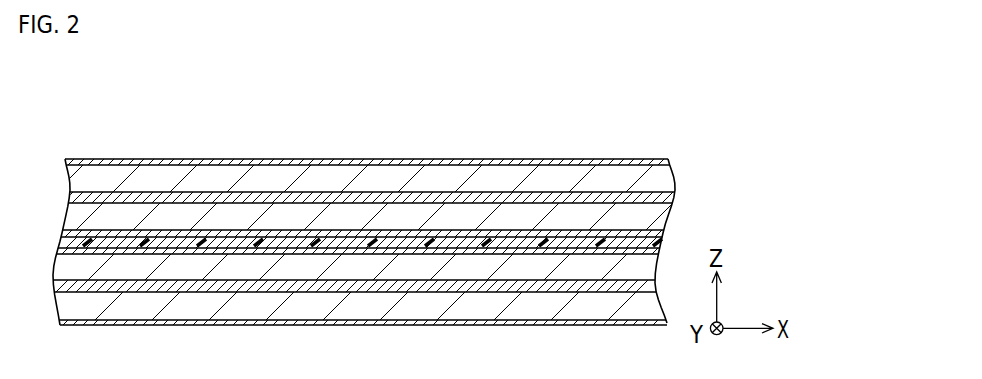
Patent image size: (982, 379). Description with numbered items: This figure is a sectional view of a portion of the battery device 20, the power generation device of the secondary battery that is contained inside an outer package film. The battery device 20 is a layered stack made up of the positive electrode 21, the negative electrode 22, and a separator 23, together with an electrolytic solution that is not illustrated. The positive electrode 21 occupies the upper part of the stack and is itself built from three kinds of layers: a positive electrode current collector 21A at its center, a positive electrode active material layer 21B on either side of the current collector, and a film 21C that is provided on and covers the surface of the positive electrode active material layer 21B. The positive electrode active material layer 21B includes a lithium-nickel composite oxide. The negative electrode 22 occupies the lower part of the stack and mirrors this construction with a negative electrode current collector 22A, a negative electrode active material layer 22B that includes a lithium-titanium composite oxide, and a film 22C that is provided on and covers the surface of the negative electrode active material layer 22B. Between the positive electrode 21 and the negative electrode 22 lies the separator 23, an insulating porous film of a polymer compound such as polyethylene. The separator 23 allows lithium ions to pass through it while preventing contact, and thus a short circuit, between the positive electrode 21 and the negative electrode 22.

The battery device 20 is at (674, 126).
The positive electrode 21 is at (300, 75).
The positive electrode current collector 21A is at (125, 197).
The positive electrode active material layer 21B is at (180, 218).
The film 21C is at (247, 232).
The negative electrode 22 is at (551, 75).
The negative electrode current collector 22A is at (365, 287).
The negative electrode active material layer 22B is at (422, 307).
The film 22C is at (500, 320).
The separator 23 is at (619, 244).